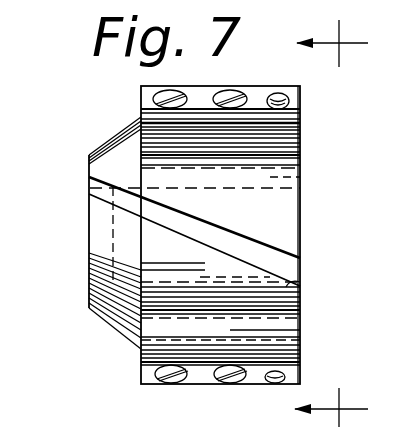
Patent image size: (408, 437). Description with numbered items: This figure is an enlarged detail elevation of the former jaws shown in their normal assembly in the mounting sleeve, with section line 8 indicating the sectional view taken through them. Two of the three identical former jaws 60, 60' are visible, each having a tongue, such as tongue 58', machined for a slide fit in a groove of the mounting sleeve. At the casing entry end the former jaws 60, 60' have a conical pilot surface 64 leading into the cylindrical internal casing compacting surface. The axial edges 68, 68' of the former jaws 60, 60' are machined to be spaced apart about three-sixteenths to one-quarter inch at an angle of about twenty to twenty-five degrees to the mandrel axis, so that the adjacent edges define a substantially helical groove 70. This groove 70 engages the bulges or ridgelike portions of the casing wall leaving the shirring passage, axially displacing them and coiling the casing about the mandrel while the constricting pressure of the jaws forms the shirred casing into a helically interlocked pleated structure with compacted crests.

The tongue 58' is at (248, 113).
The former jaw 60' is at (219, 157).
The axial edge 68' is at (220, 232).
The axial edge 68 is at (241, 290).
The former jaw 60 is at (239, 353).
The helical groove 70 is at (90, 188).
The conical pilot surface 64 is at (87, 287).
The section line 8- 8 is at (339, 223).